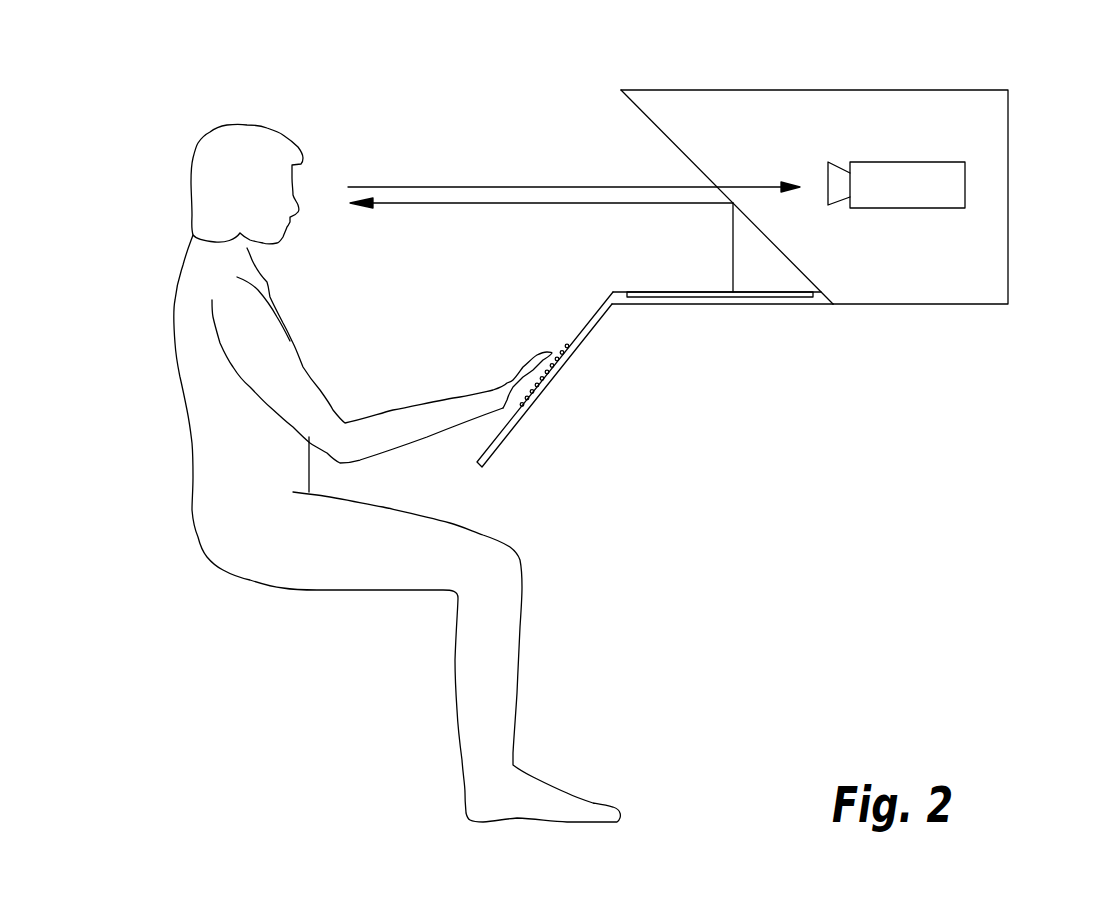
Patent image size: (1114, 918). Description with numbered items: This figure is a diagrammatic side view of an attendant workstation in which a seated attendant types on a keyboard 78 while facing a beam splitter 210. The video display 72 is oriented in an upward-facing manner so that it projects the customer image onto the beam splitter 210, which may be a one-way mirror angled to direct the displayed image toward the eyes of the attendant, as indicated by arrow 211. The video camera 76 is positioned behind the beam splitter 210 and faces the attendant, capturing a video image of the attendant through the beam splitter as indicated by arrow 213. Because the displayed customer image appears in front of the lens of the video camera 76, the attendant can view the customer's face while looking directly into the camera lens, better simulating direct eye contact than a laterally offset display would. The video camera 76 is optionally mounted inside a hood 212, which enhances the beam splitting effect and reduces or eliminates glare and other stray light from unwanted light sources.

The hood 212 is at (903, 90).
The beam splitter 210 is at (784, 253).
The video camera 76 is at (965, 183).
The arrow 213 is at (432, 185).
The arrow 211 is at (502, 205).
The video display 72 is at (730, 305).
The keyboard 78 is at (568, 342).